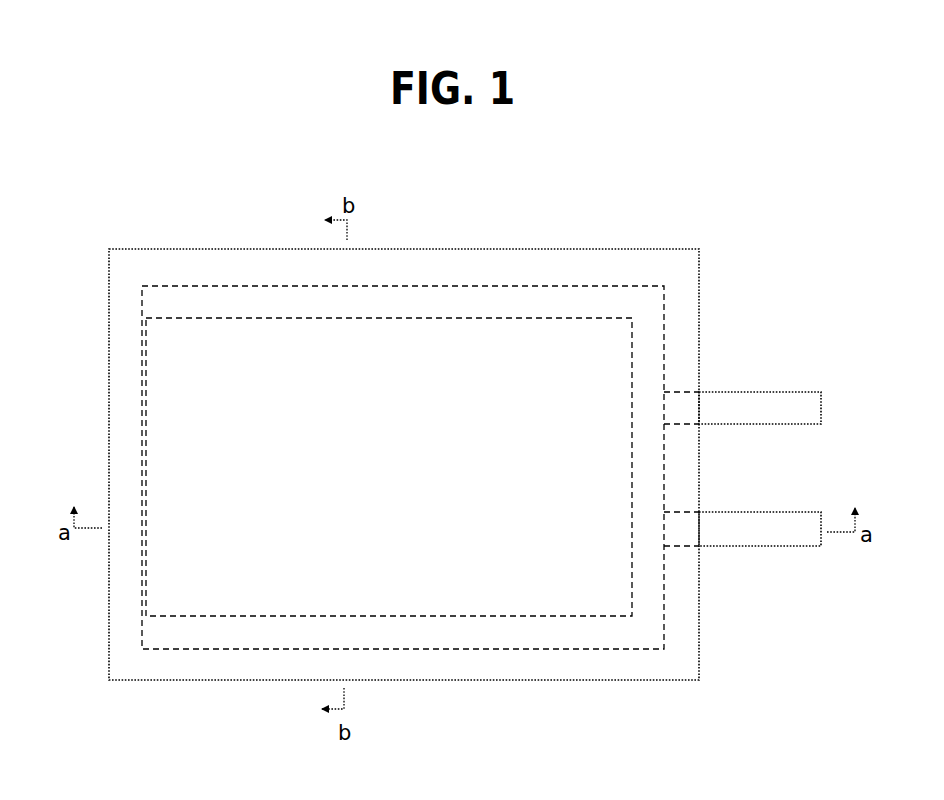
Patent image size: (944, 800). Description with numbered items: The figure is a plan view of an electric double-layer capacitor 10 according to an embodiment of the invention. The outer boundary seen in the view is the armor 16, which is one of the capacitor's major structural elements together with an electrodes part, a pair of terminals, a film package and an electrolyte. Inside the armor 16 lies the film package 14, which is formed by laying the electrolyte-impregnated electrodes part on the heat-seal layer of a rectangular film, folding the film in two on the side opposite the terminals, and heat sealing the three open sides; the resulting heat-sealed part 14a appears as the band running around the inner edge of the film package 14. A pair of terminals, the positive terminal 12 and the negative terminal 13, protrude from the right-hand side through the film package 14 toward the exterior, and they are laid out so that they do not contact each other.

The electric double-layer capacitor 10 is at (465, 434).
The armor 16 is at (193, 263).
The film package 14 is at (480, 335).
The heat-sealed part 14a is at (548, 300).
The positive terminal 12 is at (767, 405).
The negative terminal 13 is at (764, 535).